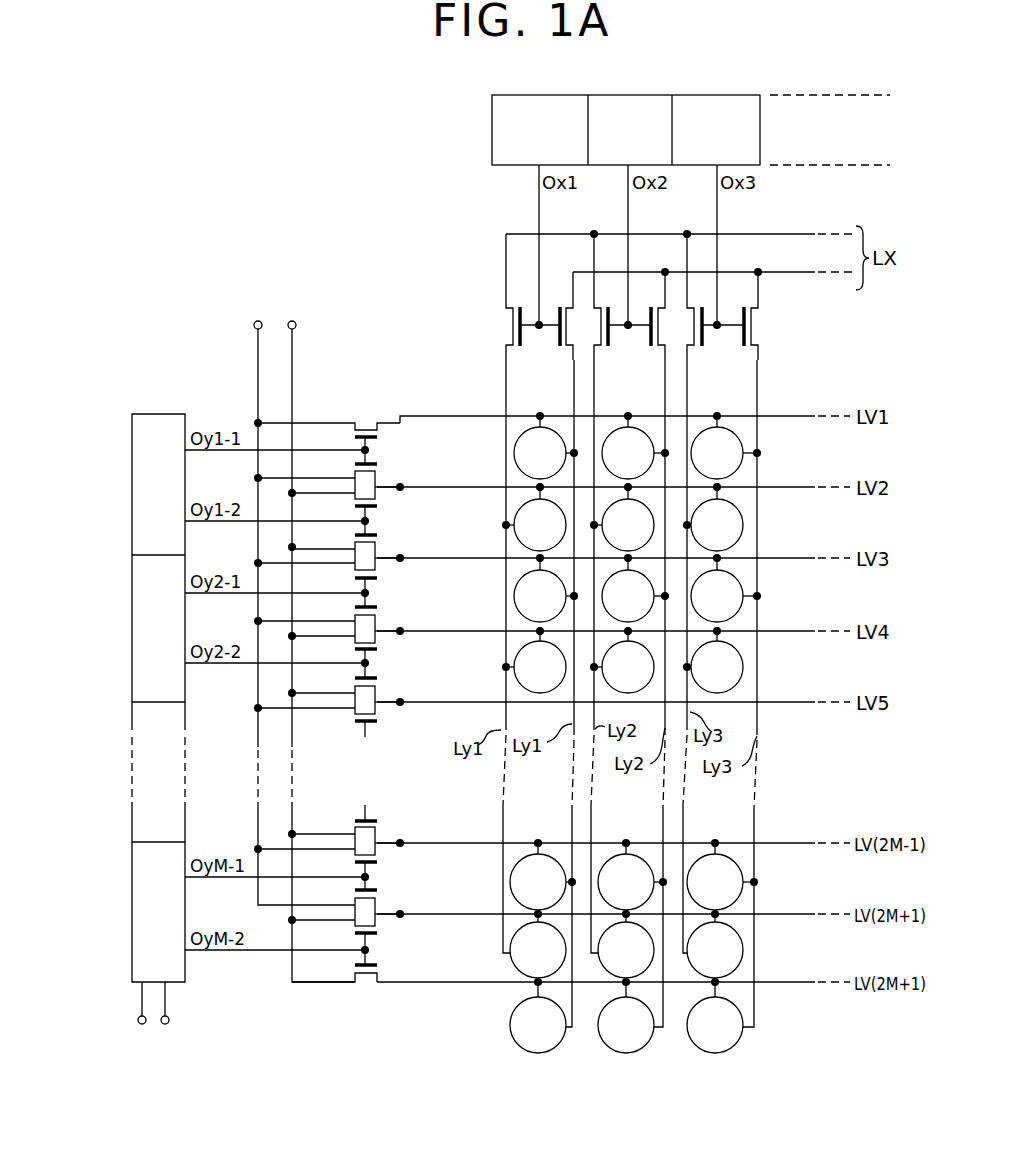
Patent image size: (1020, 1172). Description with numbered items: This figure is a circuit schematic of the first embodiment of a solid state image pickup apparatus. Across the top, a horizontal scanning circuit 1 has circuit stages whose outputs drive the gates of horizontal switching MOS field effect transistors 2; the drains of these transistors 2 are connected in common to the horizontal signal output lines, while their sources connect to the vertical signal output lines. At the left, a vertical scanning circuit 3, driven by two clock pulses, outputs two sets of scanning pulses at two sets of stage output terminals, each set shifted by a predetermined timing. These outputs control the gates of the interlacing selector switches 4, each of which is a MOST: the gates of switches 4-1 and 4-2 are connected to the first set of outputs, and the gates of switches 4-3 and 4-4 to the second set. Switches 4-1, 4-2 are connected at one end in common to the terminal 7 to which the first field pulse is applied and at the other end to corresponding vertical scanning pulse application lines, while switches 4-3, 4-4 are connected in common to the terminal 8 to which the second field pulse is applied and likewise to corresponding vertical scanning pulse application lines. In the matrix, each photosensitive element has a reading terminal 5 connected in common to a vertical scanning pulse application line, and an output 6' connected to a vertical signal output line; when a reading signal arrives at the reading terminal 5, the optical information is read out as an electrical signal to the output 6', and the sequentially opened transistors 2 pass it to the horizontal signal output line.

The horizontal scanning circuit 1 is at (492, 128).
The horizontal switching MOS field effect transistor 2 is at (505, 324).
The vertical scanning circuit 3 is at (160, 412).
The interlacing selector switches 4 is at (364, 422).
The interlacing selector switch 4-1 is at (380, 435).
The interlacing selector switch 4-2 is at (380, 463).
The interlacing selector switch 4-3 is at (380, 505).
The interlacing selector switch 4-4 is at (380, 534).
The reading terminal 5 is at (526, 430).
The output 6' is at (630, 729).
The first clock terminal F1 7 is at (254, 325).
The terminal 8 is at (296, 325).